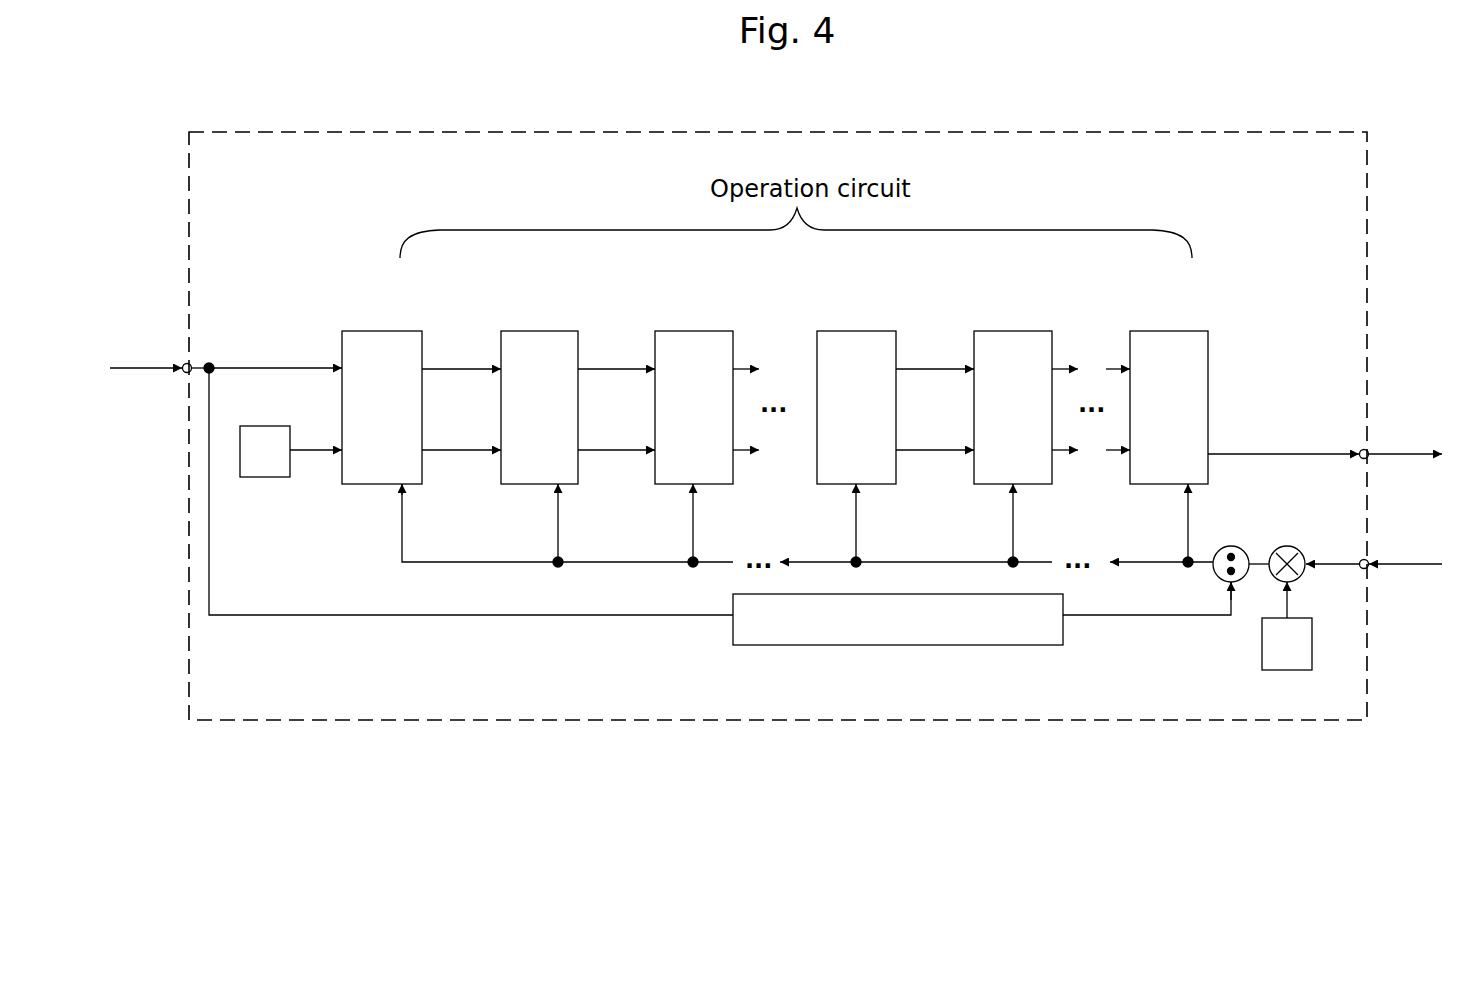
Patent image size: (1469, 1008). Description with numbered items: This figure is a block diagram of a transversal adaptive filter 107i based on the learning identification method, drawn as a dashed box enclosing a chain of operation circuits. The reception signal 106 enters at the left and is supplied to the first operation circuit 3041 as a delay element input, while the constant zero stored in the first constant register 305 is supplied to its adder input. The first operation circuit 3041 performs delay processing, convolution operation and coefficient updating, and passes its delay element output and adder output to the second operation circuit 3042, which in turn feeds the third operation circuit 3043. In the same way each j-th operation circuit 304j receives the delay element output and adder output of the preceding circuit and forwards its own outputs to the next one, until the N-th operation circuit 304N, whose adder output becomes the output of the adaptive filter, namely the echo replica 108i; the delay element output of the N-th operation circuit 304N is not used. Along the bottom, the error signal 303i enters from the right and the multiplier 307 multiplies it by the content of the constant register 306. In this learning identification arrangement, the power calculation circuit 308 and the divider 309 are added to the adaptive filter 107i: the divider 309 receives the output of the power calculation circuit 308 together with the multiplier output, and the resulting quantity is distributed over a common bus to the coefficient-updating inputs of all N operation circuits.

The adaptive filter 107i is at (1030, 132).
The reception signal 106 is at (155, 367).
The first operation circuit 3041 is at (393, 331).
The second operation circuit 3042 is at (547, 331).
The third operation circuit 3043 is at (693, 331).
The j-th operation circuit 304j is at (857, 331).
The N-th operation circuit 304N is at (1177, 331).
The first constant register 305 is at (270, 478).
The constant register 306 is at (1262, 635).
The multiplier 307 is at (1283, 547).
The power calculation circuit 308 is at (1005, 647).
The divider 309 is at (1228, 547).
The error signal 303i is at (1405, 568).
The echo replica 108i is at (1412, 454).